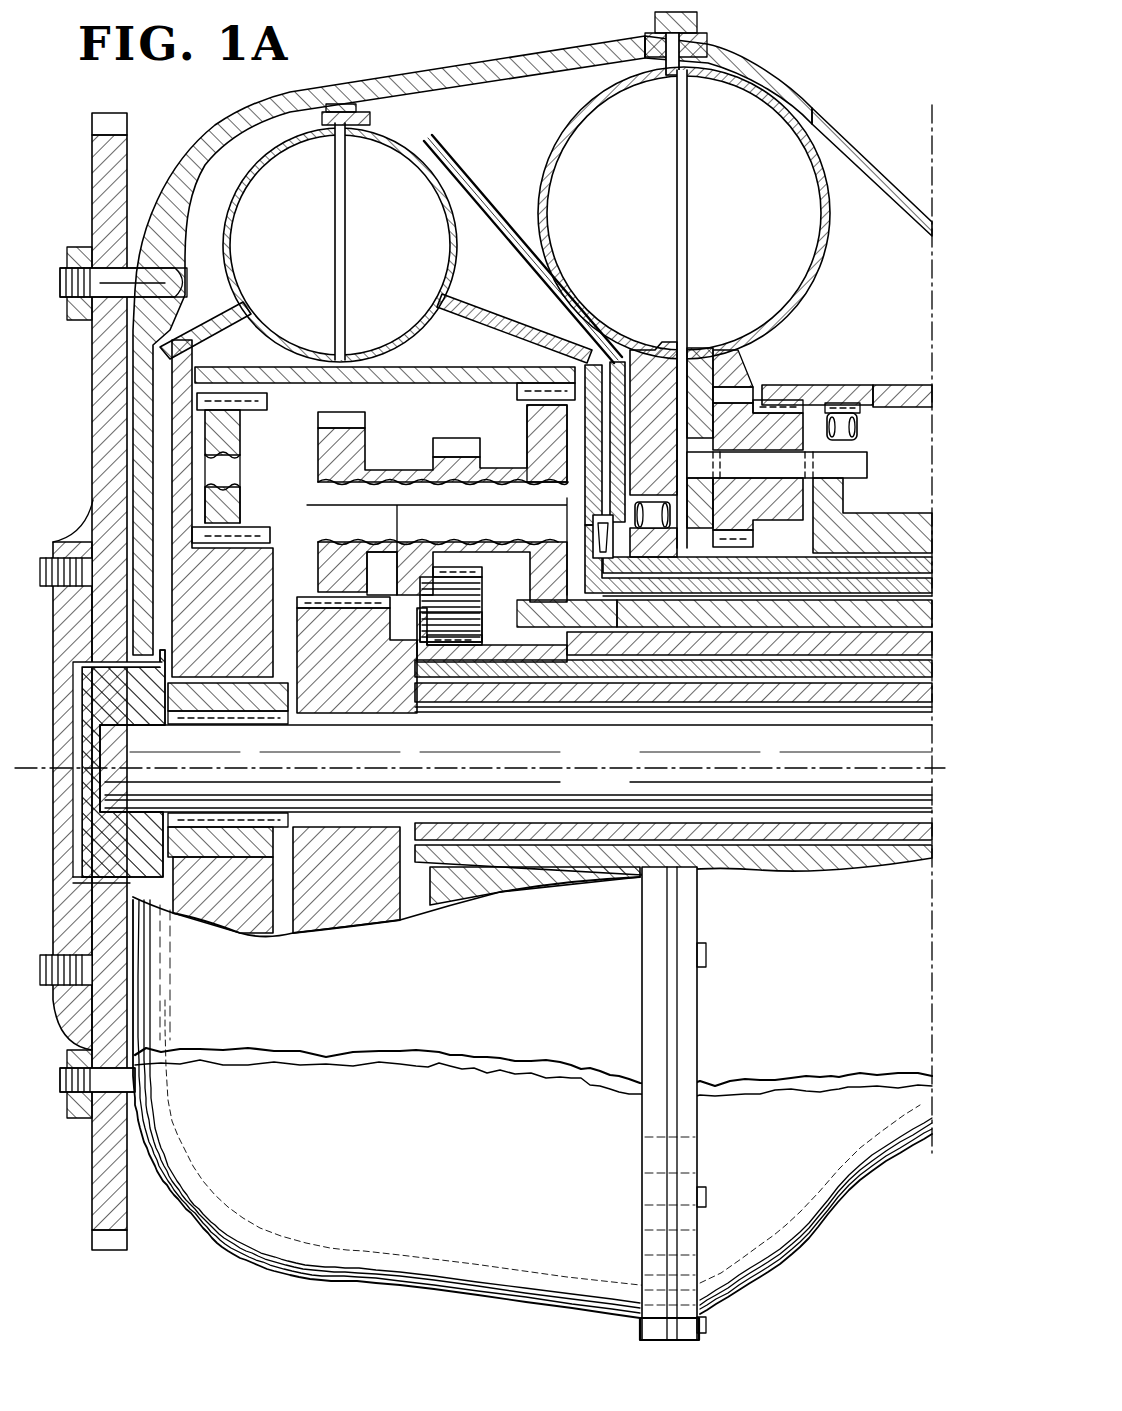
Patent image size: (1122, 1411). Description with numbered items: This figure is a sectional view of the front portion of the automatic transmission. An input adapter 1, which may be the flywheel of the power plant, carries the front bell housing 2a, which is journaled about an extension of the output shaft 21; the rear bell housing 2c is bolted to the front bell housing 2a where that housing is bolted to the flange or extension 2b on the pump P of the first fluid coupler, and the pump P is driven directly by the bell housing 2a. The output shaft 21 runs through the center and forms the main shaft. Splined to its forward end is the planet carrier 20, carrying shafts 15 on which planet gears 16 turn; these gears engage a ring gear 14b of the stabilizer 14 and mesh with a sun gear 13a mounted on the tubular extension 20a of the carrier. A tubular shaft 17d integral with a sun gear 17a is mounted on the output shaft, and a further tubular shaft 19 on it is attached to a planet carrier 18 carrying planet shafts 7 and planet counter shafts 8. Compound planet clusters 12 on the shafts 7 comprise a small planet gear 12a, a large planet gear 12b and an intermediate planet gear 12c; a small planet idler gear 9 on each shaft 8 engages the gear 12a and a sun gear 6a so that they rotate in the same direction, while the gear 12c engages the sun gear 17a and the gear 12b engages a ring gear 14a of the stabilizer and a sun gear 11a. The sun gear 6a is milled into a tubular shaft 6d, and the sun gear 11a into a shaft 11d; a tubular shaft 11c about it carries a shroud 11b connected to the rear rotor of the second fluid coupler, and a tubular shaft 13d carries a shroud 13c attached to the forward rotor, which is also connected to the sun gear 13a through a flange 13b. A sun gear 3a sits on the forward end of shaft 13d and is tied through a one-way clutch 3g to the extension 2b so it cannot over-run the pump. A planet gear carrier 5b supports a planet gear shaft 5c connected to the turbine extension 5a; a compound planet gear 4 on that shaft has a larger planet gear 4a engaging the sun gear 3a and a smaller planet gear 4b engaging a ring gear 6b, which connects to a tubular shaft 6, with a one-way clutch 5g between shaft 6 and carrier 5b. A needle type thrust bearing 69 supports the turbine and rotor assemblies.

The input adapter 1 is at (80, 608).
The front bell housing 2a is at (188, 150).
The extension from housing of first fluid coupler pump 2b is at (655, 410).
The rear bell housing 2c is at (820, 100).
The sun gear 3a is at (755, 541).
The one-way clutch 3g is at (652, 500).
The compound planet gear 4 is at (755, 435).
The larger planet gear 4a is at (738, 392).
The smaller planet gear 4b is at (766, 505).
The extension from turbine 5a is at (716, 350).
The planet gear carrier 5b is at (703, 498).
The planet gear shaft 5c is at (750, 471).
The one-way clutch 5g is at (873, 424).
The tubular shaft 6 is at (895, 387).
The sun gear 6a is at (495, 642).
The ring gear 6b is at (815, 385).
The tubular shaft 6d is at (592, 655).
The planet shaft 7 is at (432, 506).
The planet counter shaft 8 is at (482, 612).
The small planet idler gear 9 is at (482, 590).
The sun gear 11a is at (597, 542).
The shroud 11b is at (490, 320).
The tubular shaft 11c is at (735, 585).
The tubular shaft 11d is at (666, 588).
The compound planet cluster 12 is at (405, 433).
The small planet gear 12a is at (462, 448).
The large planet gear 12b is at (535, 432).
The intermediate planet gear 12c is at (332, 420).
The sun gear 13a is at (212, 606).
The flange 13b is at (212, 312).
The shroud 13c is at (482, 210).
The tubular shaft 13d is at (825, 568).
The stabilizer 14 is at (445, 374).
The ring gear 14a is at (518, 391).
The ring gear 14b is at (248, 410).
The shaft 15 is at (248, 470).
The planet gear 16 is at (242, 447).
The sun gear 17a is at (353, 697).
The tubular shaft 17d is at (447, 705).
The planet carrier 18 is at (398, 600).
The tubular shaft 19 is at (592, 703).
The planet carrier 20 is at (288, 538).
The tubular extension 20a is at (237, 703).
The output shaft 21 is at (580, 804).
The needle type thrust bearing 69 is at (590, 510).